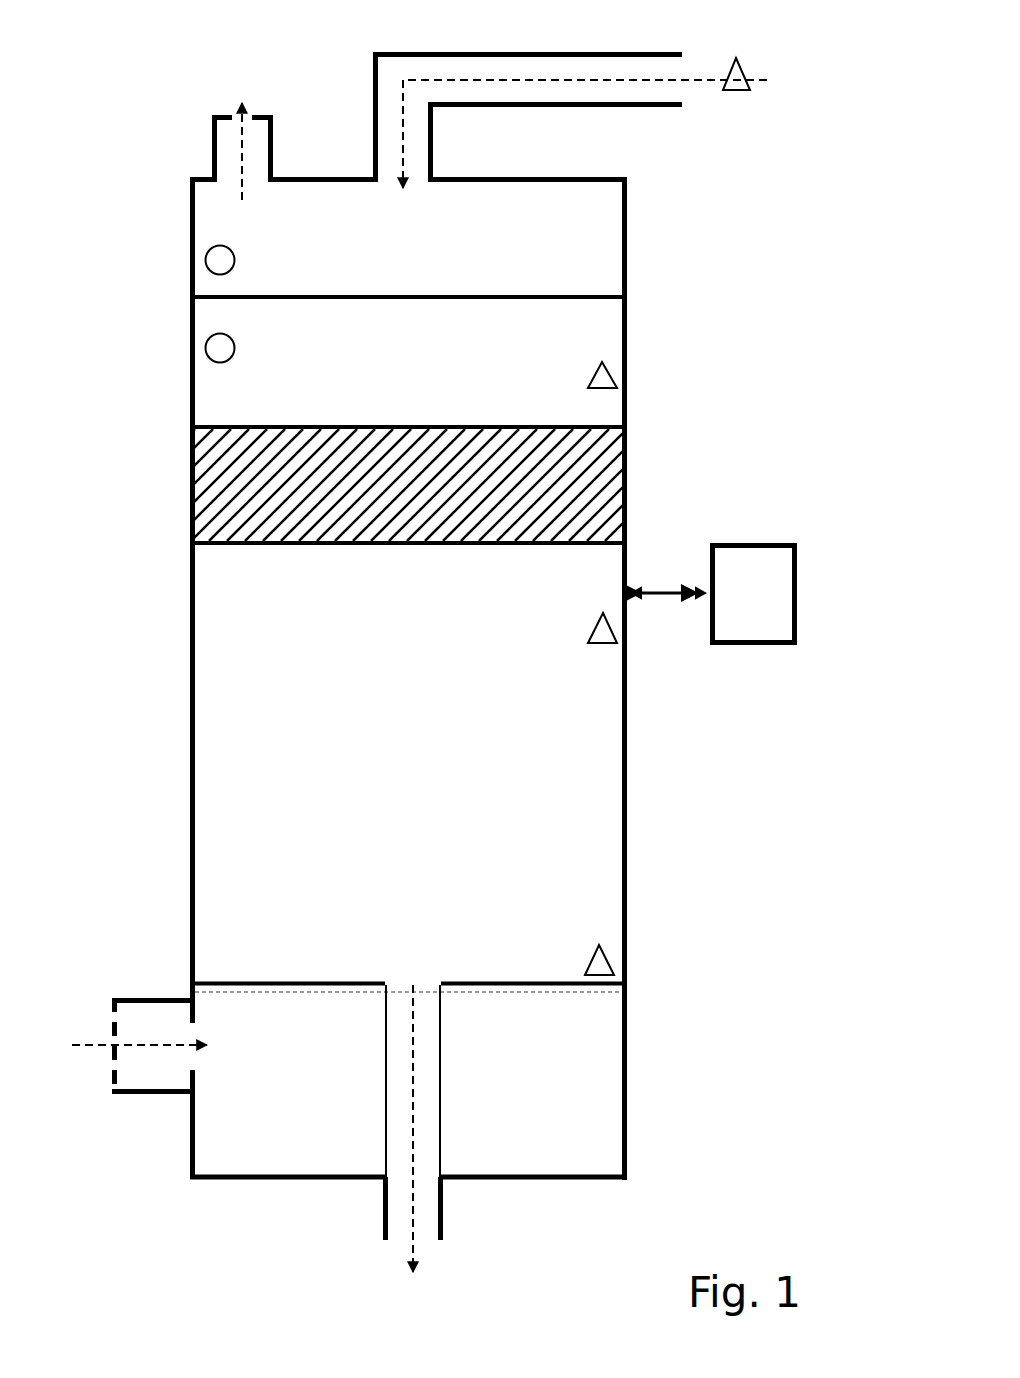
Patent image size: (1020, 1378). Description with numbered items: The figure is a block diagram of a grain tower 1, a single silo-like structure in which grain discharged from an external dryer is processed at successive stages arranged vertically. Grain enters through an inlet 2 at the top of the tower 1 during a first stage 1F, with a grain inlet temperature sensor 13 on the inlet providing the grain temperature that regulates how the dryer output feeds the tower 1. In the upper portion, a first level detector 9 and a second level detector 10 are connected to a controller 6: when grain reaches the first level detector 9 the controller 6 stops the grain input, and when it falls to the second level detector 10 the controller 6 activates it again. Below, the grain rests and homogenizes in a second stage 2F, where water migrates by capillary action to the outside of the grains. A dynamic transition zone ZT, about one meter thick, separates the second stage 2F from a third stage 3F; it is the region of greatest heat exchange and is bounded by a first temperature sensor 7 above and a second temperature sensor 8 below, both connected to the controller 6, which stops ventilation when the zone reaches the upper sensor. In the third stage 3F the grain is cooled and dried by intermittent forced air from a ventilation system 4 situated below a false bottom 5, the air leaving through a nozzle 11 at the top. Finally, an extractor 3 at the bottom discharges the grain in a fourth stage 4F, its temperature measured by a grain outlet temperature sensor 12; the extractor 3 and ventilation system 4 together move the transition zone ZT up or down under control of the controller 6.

The tower 1 is at (628, 238).
The inlet 2 is at (537, 53).
The extractor 3 is at (380, 1210).
The ventilation system 4 is at (130, 999).
The false bottom 5 is at (595, 993).
The controller 6 is at (713, 594).
The first temperature sensor 7 is at (592, 372).
The second temperature sensor 8 is at (595, 628).
The first level detector 9 is at (235, 260).
The second level detector 10 is at (235, 348).
The nozzle 11 is at (212, 148).
The grain outlet temperature sensor 12 is at (590, 955).
The grain inlet temperature sensor 13 is at (727, 72).
The transition zone ZT is at (225, 483).
The first stage 1F is at (413, 237).
The second stage 2F is at (413, 372).
The third stage 3F is at (410, 901).
The fourth stage 4F is at (418, 1307).